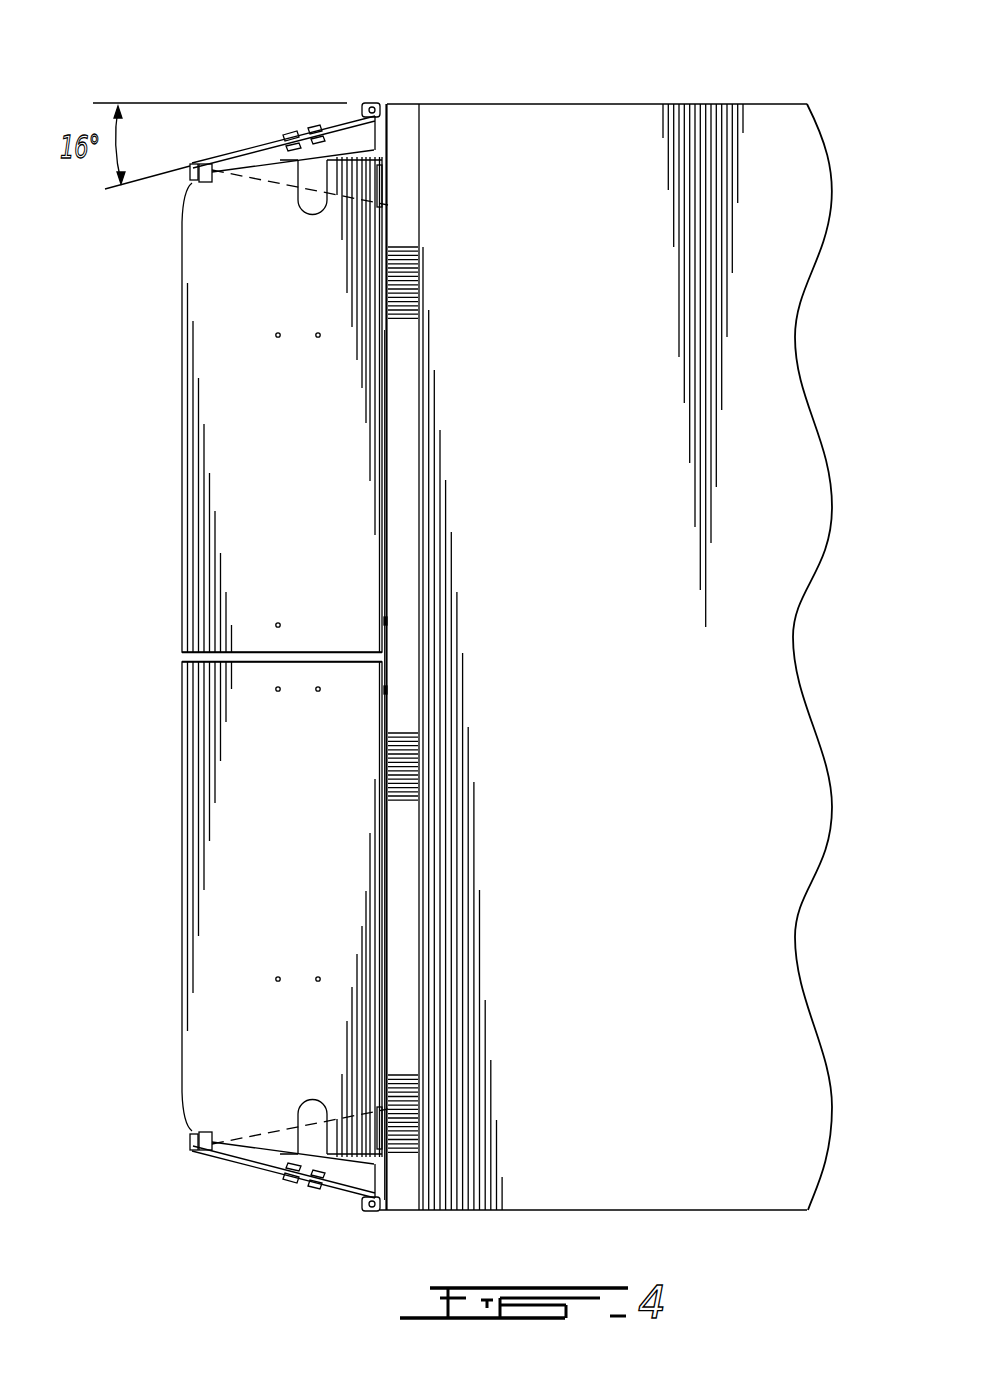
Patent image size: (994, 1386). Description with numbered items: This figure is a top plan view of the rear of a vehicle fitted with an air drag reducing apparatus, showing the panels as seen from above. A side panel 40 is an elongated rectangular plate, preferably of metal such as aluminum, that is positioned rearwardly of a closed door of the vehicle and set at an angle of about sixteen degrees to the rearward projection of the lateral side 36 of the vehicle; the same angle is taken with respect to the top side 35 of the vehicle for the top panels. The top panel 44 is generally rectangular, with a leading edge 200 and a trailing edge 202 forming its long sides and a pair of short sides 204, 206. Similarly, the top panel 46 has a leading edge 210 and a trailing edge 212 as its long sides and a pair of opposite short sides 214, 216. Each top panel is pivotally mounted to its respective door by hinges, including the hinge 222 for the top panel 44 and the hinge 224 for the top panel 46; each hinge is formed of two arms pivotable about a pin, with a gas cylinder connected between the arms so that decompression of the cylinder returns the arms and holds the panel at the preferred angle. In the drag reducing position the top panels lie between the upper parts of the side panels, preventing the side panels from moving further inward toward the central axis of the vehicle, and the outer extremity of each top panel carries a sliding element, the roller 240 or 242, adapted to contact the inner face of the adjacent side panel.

The top side of the vehicle 35 is at (767, 192).
The lateral side of the vehicle 36 is at (670, 102).
The side panel 40 is at (247, 147).
The top panel 44 is at (255, 458).
The top panel 46 is at (267, 862).
The leading edge 200 is at (383, 525).
The trailing edge 202 is at (182, 556).
The short side 204 is at (270, 652).
The short side 206 is at (249, 170).
The leading edge 210 is at (383, 838).
The trailing edge 212 is at (182, 955).
The short side 214 is at (306, 662).
The short side 216 is at (245, 1152).
The hinge 222 is at (386, 622).
The hinge 224 is at (386, 690).
The roller 240 is at (197, 163).
The roller 242 is at (177, 1105).